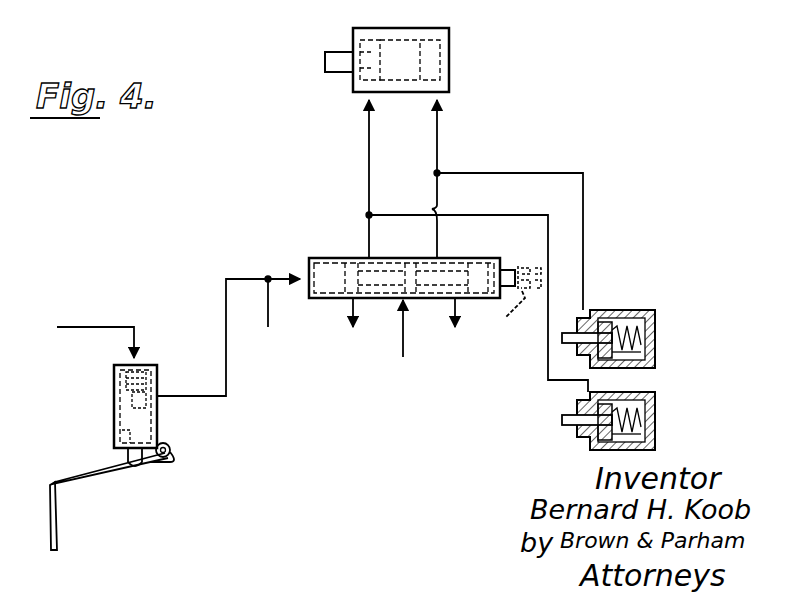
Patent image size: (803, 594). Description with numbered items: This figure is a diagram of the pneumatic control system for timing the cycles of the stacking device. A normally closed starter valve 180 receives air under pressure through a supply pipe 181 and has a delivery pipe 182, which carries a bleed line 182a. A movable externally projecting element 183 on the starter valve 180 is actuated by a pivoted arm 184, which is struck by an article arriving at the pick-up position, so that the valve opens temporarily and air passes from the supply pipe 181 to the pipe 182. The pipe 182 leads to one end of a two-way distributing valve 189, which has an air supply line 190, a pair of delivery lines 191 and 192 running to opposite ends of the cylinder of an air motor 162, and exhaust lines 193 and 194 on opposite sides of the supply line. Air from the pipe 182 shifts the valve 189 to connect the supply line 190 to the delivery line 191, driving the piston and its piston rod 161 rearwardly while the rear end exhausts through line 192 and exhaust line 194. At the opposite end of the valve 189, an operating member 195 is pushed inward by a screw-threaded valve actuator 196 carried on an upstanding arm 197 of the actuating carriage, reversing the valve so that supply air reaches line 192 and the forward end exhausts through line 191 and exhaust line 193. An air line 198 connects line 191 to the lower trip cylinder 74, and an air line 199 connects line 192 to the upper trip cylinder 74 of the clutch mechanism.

The air motor 162 is at (455, 50).
The piston rod 161 is at (338, 68).
The delivery line 191 is at (369, 148).
The delivery line 192 is at (437, 138).
The air line 199 is at (583, 182).
The air line 198 is at (548, 228).
The two-way distributing valve 189 is at (335, 268).
The operating member 195 is at (508, 268).
The valve actuator 196 is at (522, 265).
The upstanding arm 197 is at (519, 303).
The exhaust line 193 is at (354, 305).
The exhaust line 194 is at (456, 305).
The air supply line 190 is at (403, 340).
The delivery pipe 182 is at (180, 394).
The bleed line 182a is at (269, 303).
The supply pipe 181 is at (96, 327).
The starter valve 180 is at (114, 409).
The movable externally projecting element 183 is at (165, 470).
The pivoted arm 184 is at (106, 478).
The air motor (trip cylinder) 74 is at (655, 352).